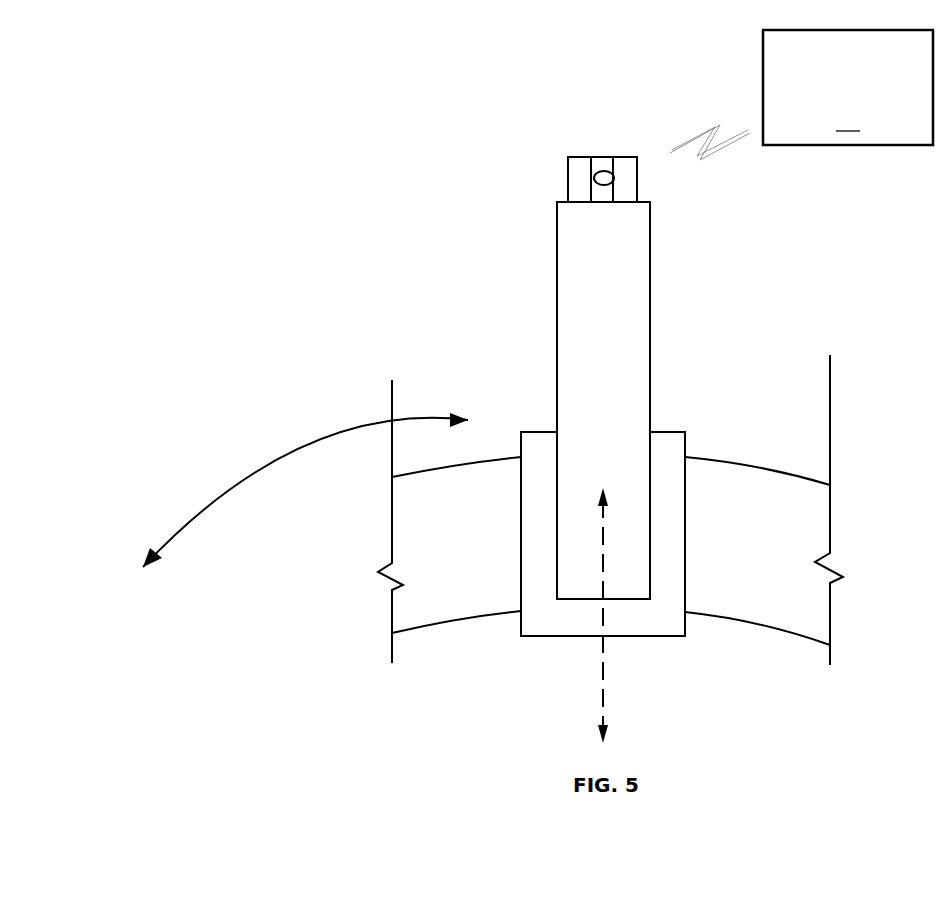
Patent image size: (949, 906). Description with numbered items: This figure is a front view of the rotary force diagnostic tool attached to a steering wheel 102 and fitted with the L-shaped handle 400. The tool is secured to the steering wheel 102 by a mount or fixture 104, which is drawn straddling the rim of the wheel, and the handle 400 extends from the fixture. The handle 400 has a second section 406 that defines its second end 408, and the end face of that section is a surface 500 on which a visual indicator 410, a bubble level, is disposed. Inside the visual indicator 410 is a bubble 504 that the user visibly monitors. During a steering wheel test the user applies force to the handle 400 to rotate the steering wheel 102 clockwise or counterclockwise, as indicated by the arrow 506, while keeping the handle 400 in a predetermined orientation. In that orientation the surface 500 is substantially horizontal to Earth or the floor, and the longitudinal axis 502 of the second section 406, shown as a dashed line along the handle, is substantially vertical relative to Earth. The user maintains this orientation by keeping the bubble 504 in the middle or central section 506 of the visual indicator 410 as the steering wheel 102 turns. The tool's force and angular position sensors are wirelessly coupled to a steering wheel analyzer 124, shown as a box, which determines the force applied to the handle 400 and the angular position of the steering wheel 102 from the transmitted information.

The steering wheel 102 is at (810, 523).
The mount or fixture 104 is at (668, 444).
The steering wheel analyzer 124 is at (801, 95).
The handle 400 is at (694, 302).
The second section 406 is at (593, 397).
The second end 408 is at (530, 159).
The surface 500 is at (530, 159).
The visual indicator 410 is at (557, 202).
The longitudinal axis 502 is at (600, 687).
The bubble 504 is at (601, 179).
The arrow 506 is at (597, 145).